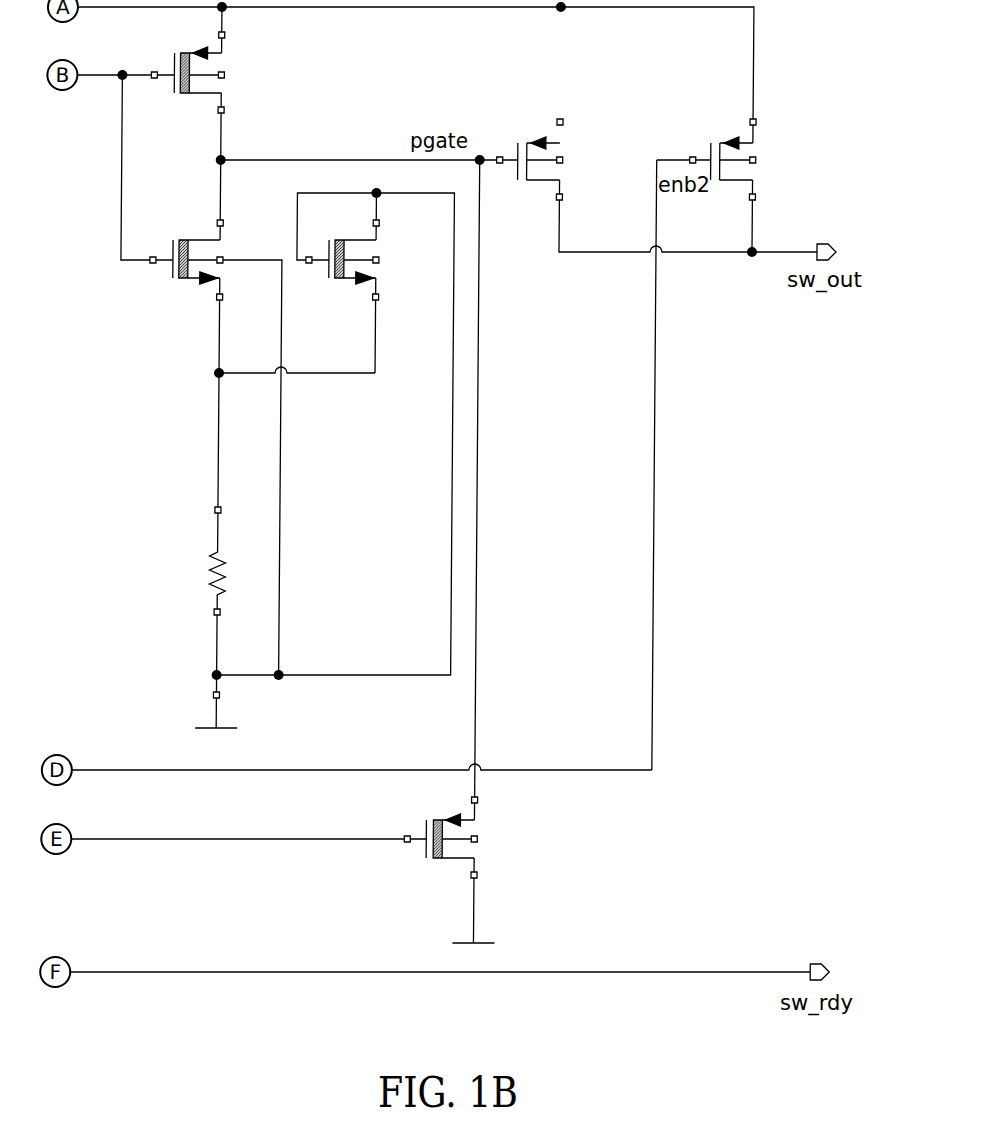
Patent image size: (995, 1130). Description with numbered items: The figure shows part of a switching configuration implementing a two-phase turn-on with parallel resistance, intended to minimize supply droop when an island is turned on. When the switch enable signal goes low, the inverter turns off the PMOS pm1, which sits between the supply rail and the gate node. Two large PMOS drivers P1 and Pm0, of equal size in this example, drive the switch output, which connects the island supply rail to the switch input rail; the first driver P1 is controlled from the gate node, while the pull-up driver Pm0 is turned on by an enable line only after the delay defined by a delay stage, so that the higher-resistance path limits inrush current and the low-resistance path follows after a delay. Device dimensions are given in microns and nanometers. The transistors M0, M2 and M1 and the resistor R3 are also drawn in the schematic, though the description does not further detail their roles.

The PMOS pm1 is at (232, 81).
The NMOS transistor M0 (w=1u, l=500.0n) M0 is at (201, 262).
The NMOS transistor M2 (w=1u, l=2u) M2 is at (370, 274).
The large PMOS driver P1 is at (576, 148).
The pull-up driver Pm0 is at (769, 148).
The NMOS transistor M1 (w=5u, l=350.0n) M1 is at (454, 857).
The resistor R3 (mr3t) R3 is at (239, 617).